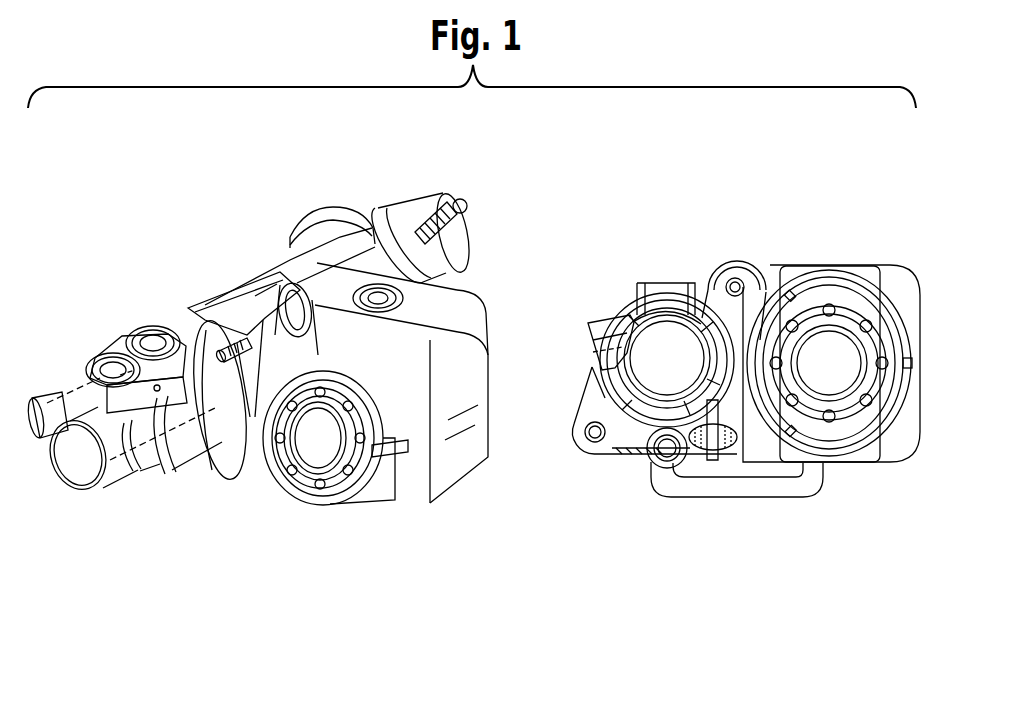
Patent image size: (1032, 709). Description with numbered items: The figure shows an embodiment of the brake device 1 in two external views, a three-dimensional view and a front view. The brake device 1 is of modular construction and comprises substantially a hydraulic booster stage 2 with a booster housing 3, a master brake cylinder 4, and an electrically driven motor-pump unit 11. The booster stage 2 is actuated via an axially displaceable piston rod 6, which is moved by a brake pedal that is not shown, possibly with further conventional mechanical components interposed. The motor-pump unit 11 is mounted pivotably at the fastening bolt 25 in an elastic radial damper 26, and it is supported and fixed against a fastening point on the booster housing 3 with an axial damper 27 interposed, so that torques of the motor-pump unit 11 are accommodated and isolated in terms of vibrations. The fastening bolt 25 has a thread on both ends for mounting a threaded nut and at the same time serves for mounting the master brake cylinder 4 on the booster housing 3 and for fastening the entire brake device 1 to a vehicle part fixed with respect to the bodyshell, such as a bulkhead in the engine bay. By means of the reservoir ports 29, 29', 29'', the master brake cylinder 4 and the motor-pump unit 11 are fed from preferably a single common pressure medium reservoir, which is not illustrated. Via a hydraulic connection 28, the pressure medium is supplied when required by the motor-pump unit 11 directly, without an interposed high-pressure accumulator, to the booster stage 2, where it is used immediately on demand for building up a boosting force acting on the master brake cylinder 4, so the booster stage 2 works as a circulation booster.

The brake device 1 is at (356, 169).
The hydraulic booster stage 2 is at (207, 274).
The booster housing 3 is at (263, 283).
The master brake cylinder 4 is at (163, 472).
The piston rod 6 is at (460, 199).
The motor-pump unit 11 is at (470, 483).
The fastening bolt 25 is at (244, 368).
The elastic radial damper 26 is at (280, 286).
The axial damper 27 is at (727, 440).
The hydraulic connection 28 is at (783, 485).
The reservoir port 29 is at (423, 288).
The reservoir port 29' is at (146, 311).
The reservoir port 29'' is at (95, 342).